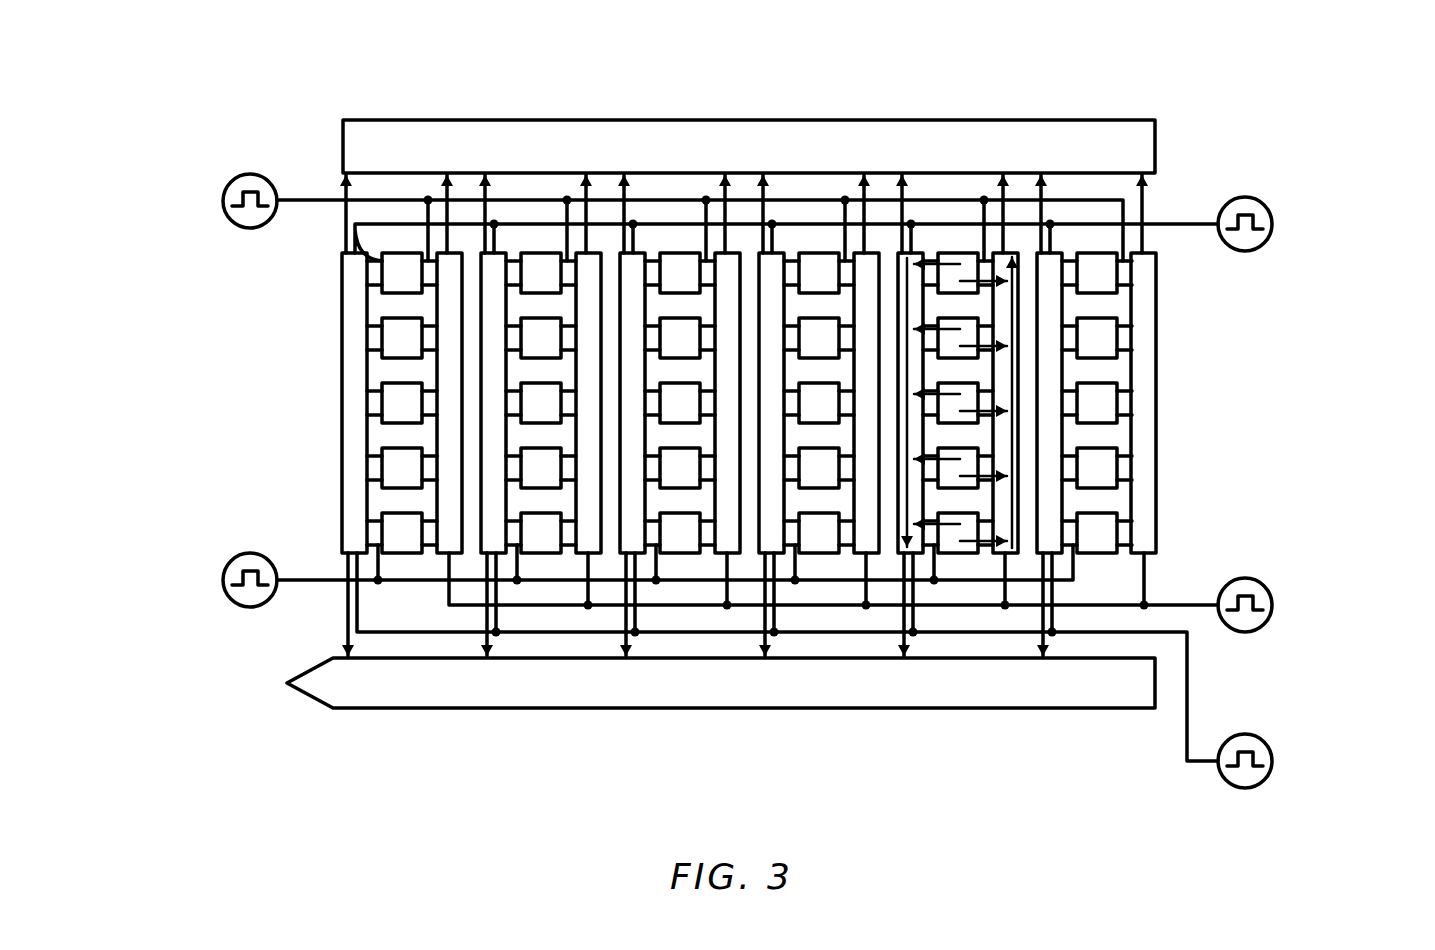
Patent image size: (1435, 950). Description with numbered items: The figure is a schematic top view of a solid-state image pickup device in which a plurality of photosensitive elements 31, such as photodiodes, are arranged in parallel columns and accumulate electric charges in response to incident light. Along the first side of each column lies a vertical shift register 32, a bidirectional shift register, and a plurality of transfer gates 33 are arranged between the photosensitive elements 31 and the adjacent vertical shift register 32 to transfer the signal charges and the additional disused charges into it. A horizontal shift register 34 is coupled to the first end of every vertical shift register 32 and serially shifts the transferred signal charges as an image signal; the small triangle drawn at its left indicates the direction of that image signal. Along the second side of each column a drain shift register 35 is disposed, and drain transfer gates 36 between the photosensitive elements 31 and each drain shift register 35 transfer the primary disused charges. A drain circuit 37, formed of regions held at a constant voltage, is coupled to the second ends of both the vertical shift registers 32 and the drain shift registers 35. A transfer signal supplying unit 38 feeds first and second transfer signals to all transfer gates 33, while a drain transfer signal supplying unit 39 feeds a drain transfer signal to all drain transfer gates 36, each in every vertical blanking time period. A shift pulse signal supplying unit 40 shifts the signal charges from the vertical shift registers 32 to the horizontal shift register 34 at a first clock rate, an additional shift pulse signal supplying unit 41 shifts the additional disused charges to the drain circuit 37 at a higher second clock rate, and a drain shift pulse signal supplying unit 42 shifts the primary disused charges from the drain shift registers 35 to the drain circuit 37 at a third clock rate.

The photosensitive elements 31 is at (1102, 293).
The vertical shift registers 32 is at (1063, 497).
The transfer gates 33 is at (350, 234).
The horizontal shift register 34 is at (877, 709).
The drain shift registers 35 is at (1147, 427).
The drain transfer gates 36 is at (427, 295).
The drain circuit 37 is at (910, 119).
The transfer signal supplying unit 38 is at (223, 581).
The drain transfer signal supplying unit 39 is at (223, 202).
The shift pulse signal supplying unit 40 is at (1272, 224).
The additional shift pulse signal supplying unit 41 is at (1273, 761).
The drain shift pulse signal supplying unit 42 is at (1273, 605).